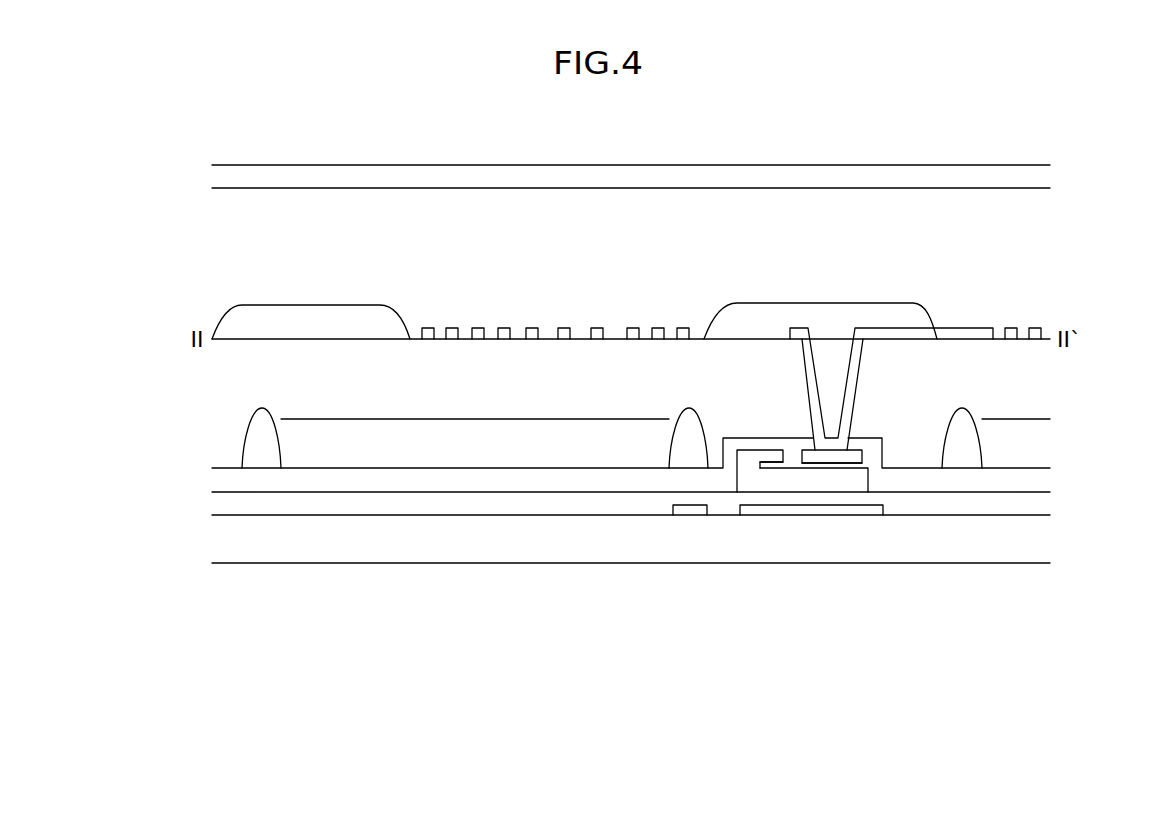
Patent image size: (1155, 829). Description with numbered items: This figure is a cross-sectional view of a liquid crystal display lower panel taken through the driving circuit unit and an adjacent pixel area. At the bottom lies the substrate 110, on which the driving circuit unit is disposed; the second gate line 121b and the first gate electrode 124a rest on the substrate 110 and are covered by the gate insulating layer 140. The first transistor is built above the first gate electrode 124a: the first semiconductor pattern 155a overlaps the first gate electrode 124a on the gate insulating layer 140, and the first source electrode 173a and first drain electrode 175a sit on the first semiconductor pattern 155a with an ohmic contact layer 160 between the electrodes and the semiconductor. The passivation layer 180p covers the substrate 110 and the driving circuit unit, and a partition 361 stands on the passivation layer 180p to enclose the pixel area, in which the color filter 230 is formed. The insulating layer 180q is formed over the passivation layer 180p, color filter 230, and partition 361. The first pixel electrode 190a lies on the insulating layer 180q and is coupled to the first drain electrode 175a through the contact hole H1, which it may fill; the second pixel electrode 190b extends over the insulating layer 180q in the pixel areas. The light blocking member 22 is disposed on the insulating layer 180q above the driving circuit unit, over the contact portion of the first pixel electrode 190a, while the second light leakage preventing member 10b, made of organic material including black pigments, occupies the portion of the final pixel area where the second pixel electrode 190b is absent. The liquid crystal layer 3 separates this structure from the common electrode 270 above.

The common electrode 270 is at (1040, 177).
The liquid crystal layer 3 is at (1040, 248).
The second light leakage preventing member 10b is at (301, 312).
The light blocking member 22 is at (831, 318).
The second pixel electrode 190b is at (631, 328).
The first pixel electrode 190a is at (1007, 331).
The contact hole H1 is at (802, 363).
The insulating layer 180q is at (225, 382).
The partition 361 is at (255, 440).
The color filter 230 is at (565, 453).
The passivation layer 180p is at (225, 479).
The gate insulating layer 140 is at (225, 508).
The substrate 110 is at (225, 545).
The second gate line 121b is at (685, 508).
The first gate electrode 124a is at (876, 510).
The first semiconductor pattern 155a is at (853, 485).
The first source electrode 173a is at (748, 483).
The first drain electrode 175a is at (820, 458).
The ohmic contact layer 160 is at (775, 466).